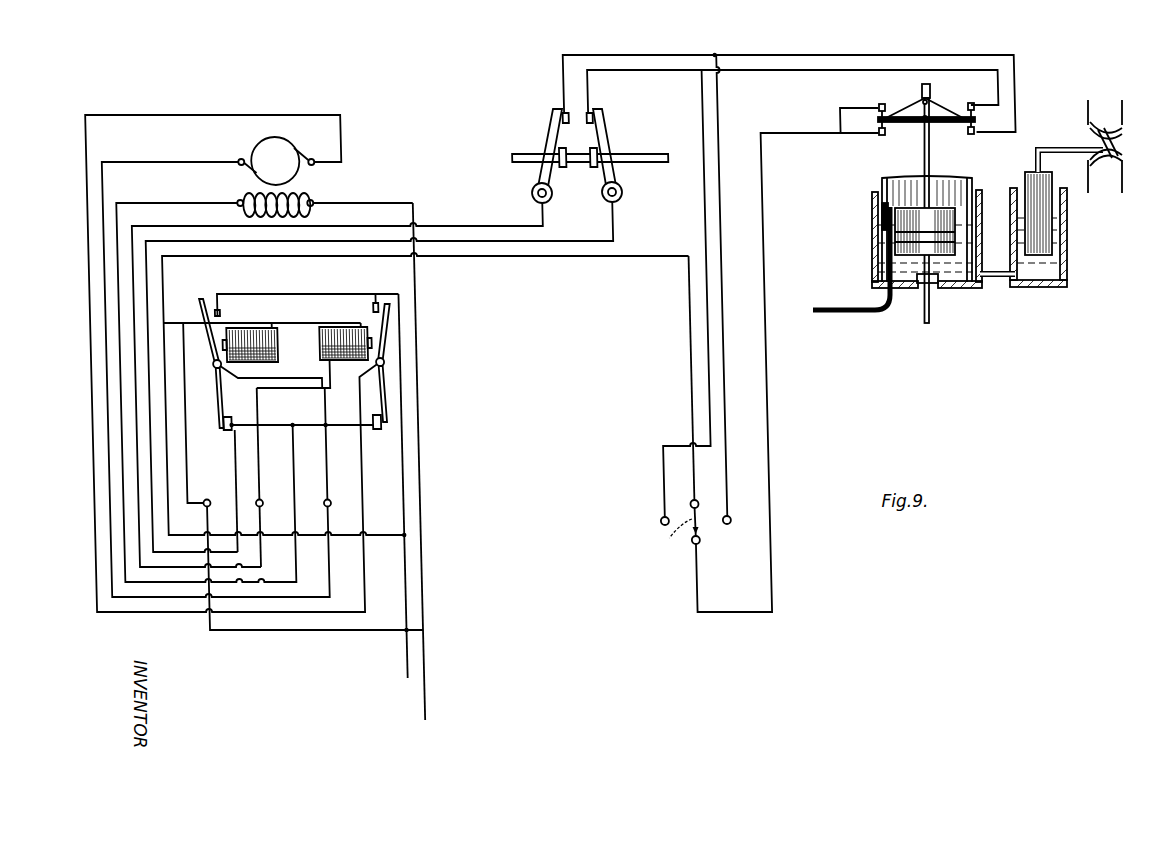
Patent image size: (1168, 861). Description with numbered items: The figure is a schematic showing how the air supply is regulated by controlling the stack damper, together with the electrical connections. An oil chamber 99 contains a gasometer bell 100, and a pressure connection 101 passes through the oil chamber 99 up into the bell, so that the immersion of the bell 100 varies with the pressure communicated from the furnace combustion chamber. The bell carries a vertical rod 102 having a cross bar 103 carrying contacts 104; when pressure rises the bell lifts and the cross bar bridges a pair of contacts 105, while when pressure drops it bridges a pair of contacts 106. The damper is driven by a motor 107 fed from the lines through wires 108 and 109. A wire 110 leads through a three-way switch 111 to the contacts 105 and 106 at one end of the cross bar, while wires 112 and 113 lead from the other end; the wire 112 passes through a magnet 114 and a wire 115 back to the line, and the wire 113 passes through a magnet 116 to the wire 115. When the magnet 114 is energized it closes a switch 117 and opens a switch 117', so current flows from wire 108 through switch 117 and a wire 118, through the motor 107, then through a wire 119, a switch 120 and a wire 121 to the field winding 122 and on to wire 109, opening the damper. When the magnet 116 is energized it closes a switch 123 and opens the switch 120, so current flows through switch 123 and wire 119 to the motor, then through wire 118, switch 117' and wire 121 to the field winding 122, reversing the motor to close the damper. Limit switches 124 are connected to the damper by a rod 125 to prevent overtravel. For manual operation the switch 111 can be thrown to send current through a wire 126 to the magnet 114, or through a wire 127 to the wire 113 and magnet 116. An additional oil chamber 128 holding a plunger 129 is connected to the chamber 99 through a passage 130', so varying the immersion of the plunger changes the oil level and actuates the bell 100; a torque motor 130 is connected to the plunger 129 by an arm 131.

The oil chamber 99 is at (969, 289).
The gasometer bell 100 is at (881, 185).
The pressure connection 101 is at (852, 312).
The vertical rod 102 is at (931, 158).
The cross bar 103 is at (945, 106).
The contacts 104 is at (877, 122).
The pair of contacts 105 is at (884, 104).
The pair of contacts 106 is at (934, 142).
The motor 107 is at (276, 161).
The wire 108 is at (400, 665).
The wire 109 is at (425, 665).
The wire 110 is at (785, 528).
The three-way switch 111 is at (669, 531).
The wire 112 is at (478, 244).
The wire 113 is at (468, 226).
The magnet 114 is at (241, 334).
The wire 115 is at (297, 640).
The magnet 116 is at (328, 334).
The switch 117 is at (287, 355).
The switch 117' is at (208, 484).
The wire 118 is at (211, 163).
The wire 119 is at (189, 114).
The switch 120 is at (381, 427).
The wire 121 is at (293, 480).
The field winding 122 is at (313, 200).
The switch 123 is at (391, 312).
The limit switches 124 is at (551, 128).
The rod 125 is at (525, 163).
The wire 126 is at (661, 472).
The wire 127 is at (729, 395).
The additional oil chamber 128 is at (1048, 288).
The plunger 129 is at (1026, 180).
The torque motor 130 is at (1125, 146).
The passage 130' is at (1005, 297).
The arm 131 is at (1062, 147).